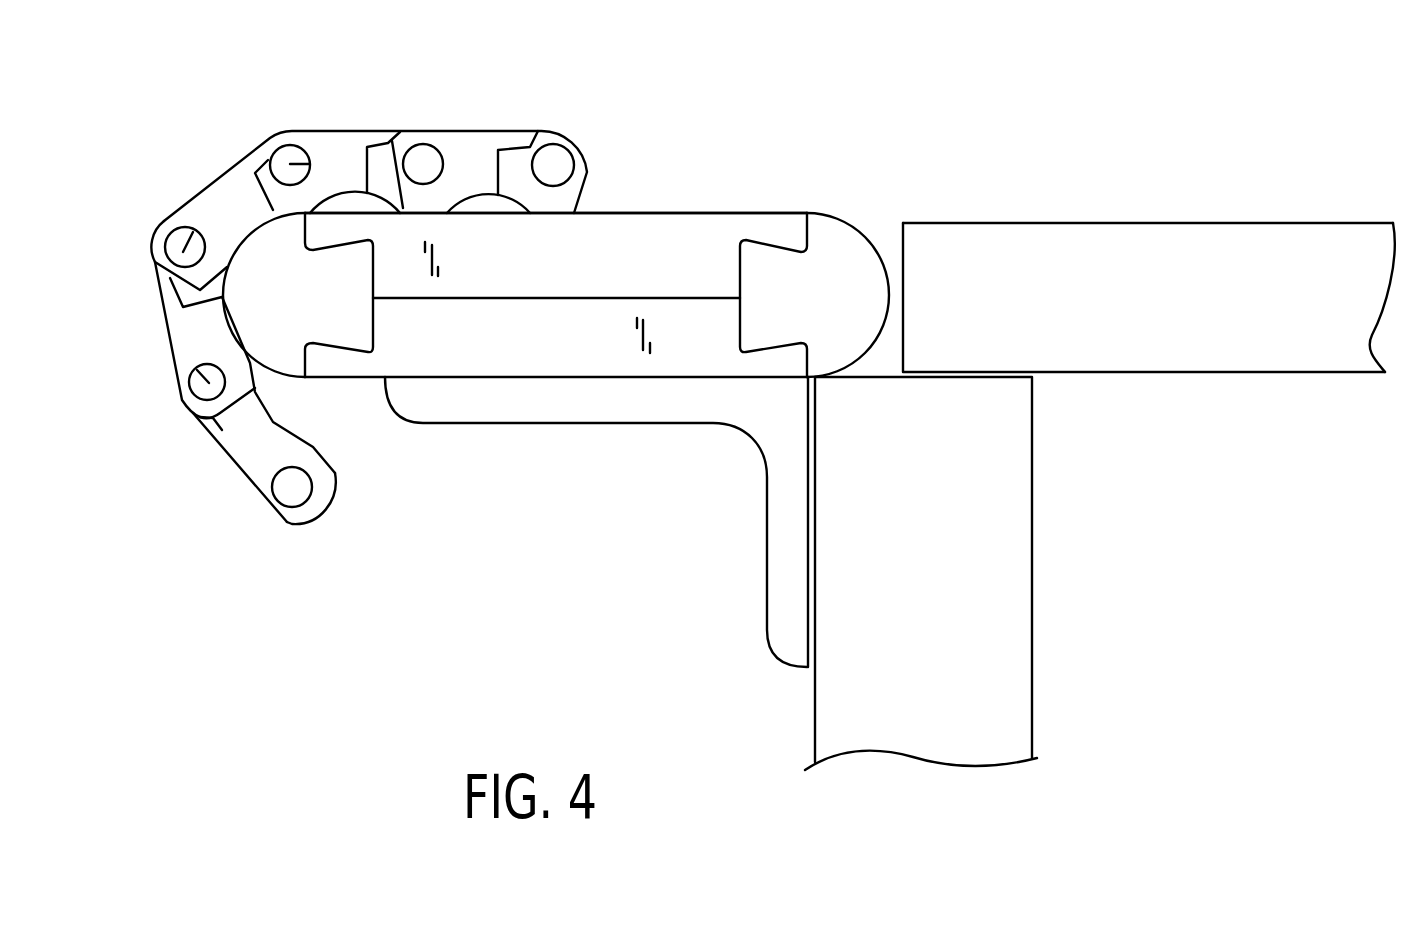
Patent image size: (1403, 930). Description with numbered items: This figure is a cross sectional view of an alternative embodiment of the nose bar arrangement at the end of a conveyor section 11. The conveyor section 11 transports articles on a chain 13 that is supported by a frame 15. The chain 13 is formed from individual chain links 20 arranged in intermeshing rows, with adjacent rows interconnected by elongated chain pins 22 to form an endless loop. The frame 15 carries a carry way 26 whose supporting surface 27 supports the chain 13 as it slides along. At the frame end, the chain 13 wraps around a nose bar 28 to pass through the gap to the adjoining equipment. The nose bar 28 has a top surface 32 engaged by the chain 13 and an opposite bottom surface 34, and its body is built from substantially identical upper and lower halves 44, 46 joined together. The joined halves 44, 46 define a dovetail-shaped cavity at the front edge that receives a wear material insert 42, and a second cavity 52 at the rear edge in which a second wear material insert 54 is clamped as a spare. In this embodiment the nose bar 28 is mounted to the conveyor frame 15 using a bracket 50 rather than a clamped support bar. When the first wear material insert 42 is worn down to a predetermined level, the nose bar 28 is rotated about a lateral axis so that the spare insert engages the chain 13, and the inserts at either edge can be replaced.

The conveyor section 11 is at (927, 80).
The chain 13 is at (467, 122).
The frame 15 is at (1115, 479).
The chain links 20 is at (333, 142).
The chain pins 22 is at (280, 154).
The carry way 26 is at (1162, 360).
The supporting surface 27 is at (987, 220).
The nose bar 28 is at (729, 200).
The top surface 32 is at (613, 210).
The bottom surface 34 is at (523, 377).
The wear material insert 42 is at (279, 312).
The upper half 44 is at (512, 273).
The lower half 46 is at (507, 358).
The bracket 50 is at (795, 590).
The second cavity 52 is at (739, 280).
The second wear material insert 54 is at (846, 240).